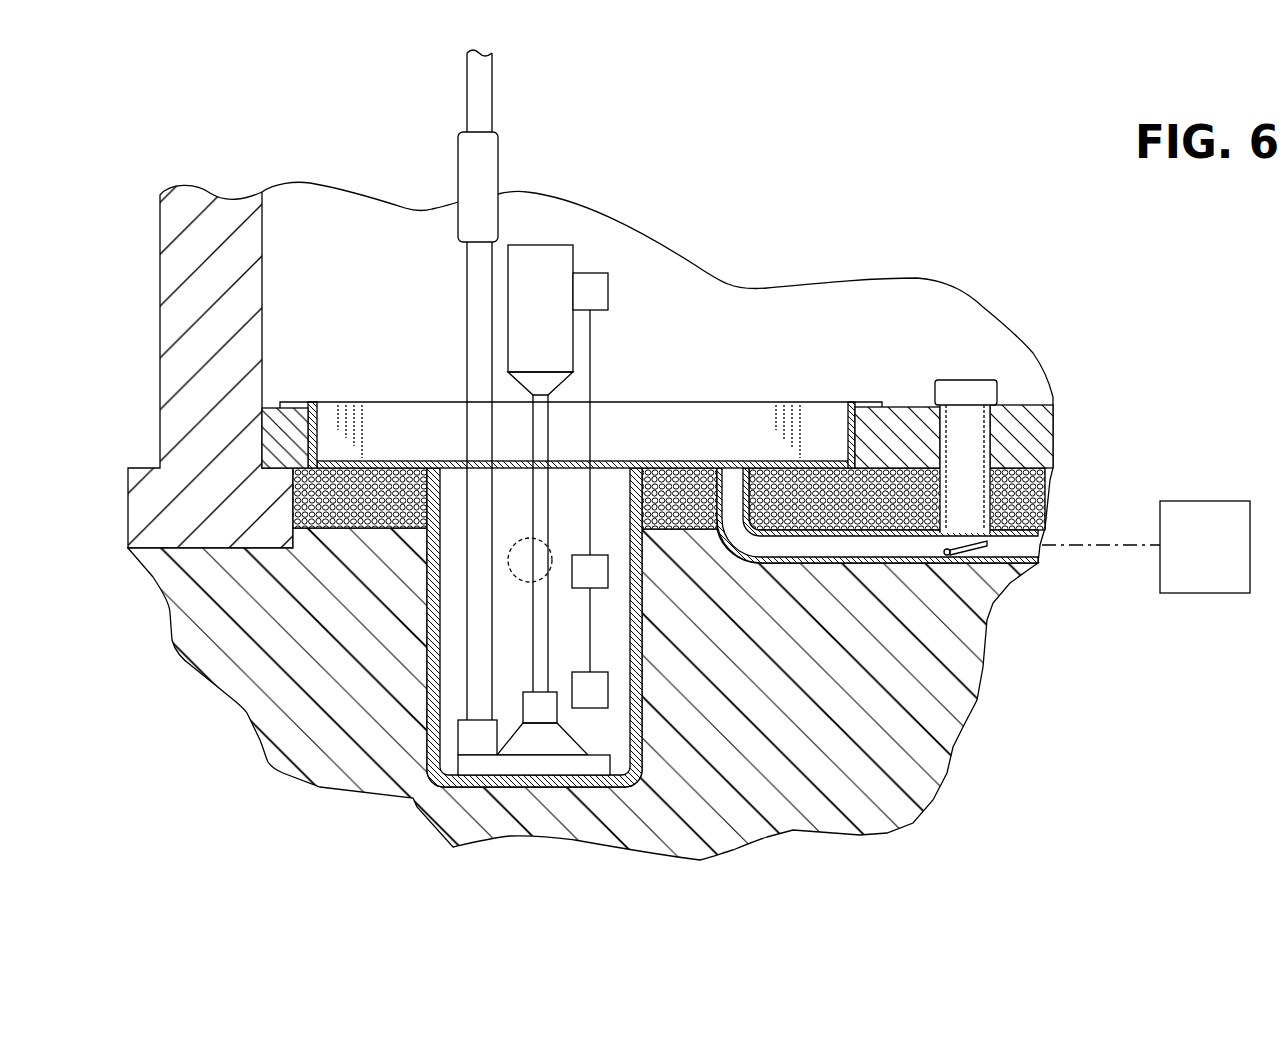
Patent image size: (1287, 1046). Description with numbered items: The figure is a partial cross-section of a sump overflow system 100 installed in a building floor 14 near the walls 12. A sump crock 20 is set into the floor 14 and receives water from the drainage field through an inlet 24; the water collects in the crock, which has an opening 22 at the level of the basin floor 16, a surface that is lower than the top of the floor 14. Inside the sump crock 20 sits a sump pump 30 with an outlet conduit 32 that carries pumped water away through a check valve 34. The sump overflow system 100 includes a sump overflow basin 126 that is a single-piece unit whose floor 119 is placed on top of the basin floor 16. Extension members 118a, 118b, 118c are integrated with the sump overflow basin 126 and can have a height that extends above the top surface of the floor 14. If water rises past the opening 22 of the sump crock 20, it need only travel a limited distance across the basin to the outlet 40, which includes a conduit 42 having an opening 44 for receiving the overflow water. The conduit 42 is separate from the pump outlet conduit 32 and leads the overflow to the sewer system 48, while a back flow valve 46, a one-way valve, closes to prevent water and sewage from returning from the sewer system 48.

The sump overflow system 100 is at (689, 463).
The walls 12 is at (262, 240).
The floor 14 is at (268, 416).
The basin floor 16 is at (344, 478).
The sump crock 20 is at (576, 448).
The opening 22 is at (614, 460).
The inlet 24 is at (516, 546).
The sump pump 30 is at (538, 766).
The outlet conduit 32 is at (476, 345).
The check valve 34 is at (473, 175).
The outlet 40 is at (721, 450).
The conduit 42 is at (770, 565).
The opening 44 is at (729, 460).
The back flow valve 46 is at (960, 390).
The sewer system 48 is at (1218, 559).
The extension member 118a is at (311, 403).
The extension member 118b is at (851, 398).
The extension member 118c is at (700, 412).
The floor 119 is at (678, 460).
The sump overflow basin 126 is at (692, 362).